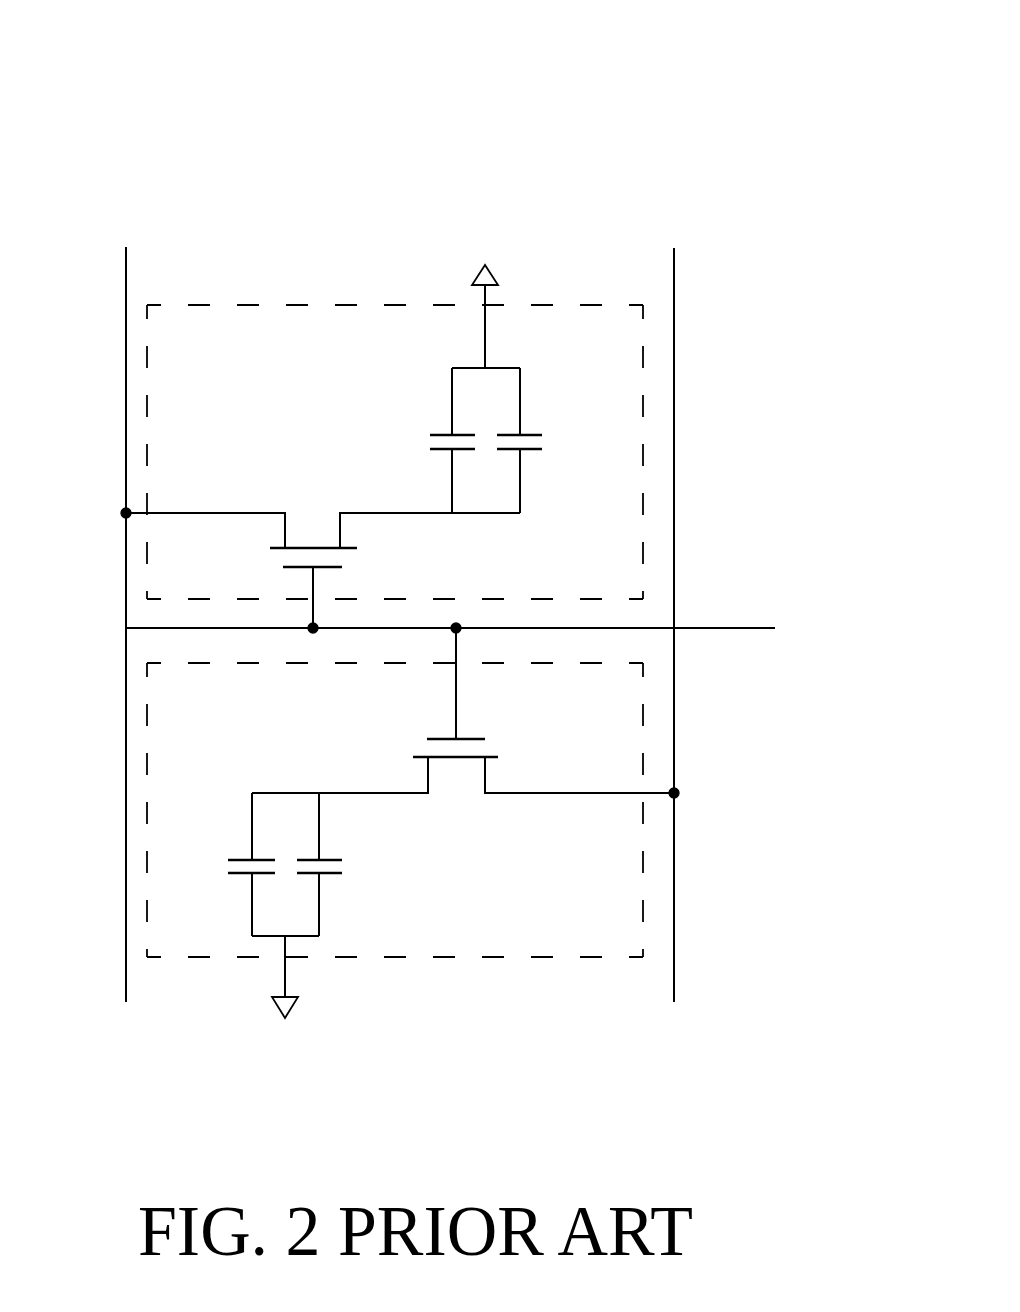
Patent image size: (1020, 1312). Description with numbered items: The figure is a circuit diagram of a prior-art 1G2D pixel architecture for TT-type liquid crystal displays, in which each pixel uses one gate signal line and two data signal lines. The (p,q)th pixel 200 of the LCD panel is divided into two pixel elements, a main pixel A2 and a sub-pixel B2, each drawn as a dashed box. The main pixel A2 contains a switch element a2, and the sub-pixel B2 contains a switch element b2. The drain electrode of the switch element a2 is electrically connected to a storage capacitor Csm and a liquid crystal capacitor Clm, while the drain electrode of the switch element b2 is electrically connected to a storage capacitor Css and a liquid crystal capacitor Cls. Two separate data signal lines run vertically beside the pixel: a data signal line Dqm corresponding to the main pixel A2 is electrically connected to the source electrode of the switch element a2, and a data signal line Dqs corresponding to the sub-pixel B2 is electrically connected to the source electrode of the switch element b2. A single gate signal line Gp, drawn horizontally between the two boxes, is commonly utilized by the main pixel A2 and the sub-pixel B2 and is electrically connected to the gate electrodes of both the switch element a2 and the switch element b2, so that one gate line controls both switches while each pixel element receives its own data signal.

The pixel 200 is at (700, 108).
The data signal line Dqm is at (125, 587).
The data signal line Dqs is at (674, 589).
The gate signal line Gp is at (410, 621).
The main pixel A2 is at (255, 305).
The sub-pixel B2 is at (497, 960).
The switch element a2 is at (293, 503).
The switch element b2 is at (467, 790).
The storage capacitor Csm is at (421, 440).
The liquid crystal capacitor Clm is at (556, 440).
The liquid crystal capacitor Cls is at (230, 864).
The storage capacitor Css is at (357, 864).